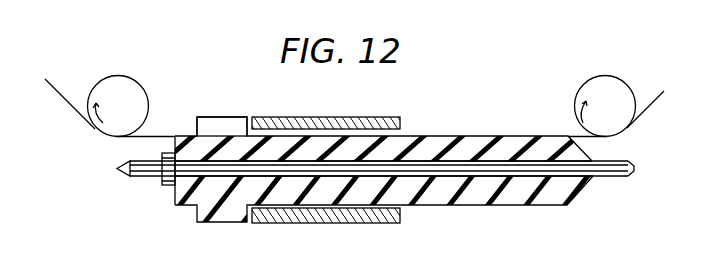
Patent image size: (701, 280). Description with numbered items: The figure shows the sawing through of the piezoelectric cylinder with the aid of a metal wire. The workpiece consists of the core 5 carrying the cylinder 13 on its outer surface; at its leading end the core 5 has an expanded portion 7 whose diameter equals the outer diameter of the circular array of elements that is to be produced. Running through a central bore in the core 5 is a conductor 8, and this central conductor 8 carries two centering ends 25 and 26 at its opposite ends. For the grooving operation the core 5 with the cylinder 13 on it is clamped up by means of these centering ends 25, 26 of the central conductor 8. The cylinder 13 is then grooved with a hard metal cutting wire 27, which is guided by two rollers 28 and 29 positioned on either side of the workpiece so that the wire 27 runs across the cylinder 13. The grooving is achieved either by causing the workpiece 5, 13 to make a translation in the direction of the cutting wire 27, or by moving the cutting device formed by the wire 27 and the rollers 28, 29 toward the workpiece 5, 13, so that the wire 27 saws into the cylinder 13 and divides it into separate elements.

The core 5 is at (356, 185).
The expanded portion 7 is at (222, 125).
The conductor 8 is at (423, 180).
The cylinder 13 is at (308, 120).
The centering end 25 is at (145, 176).
The centering end 26 is at (622, 176).
The hard metal cutting wire 27 is at (70, 106).
The roller 28 is at (130, 92).
The roller 29 is at (593, 90).